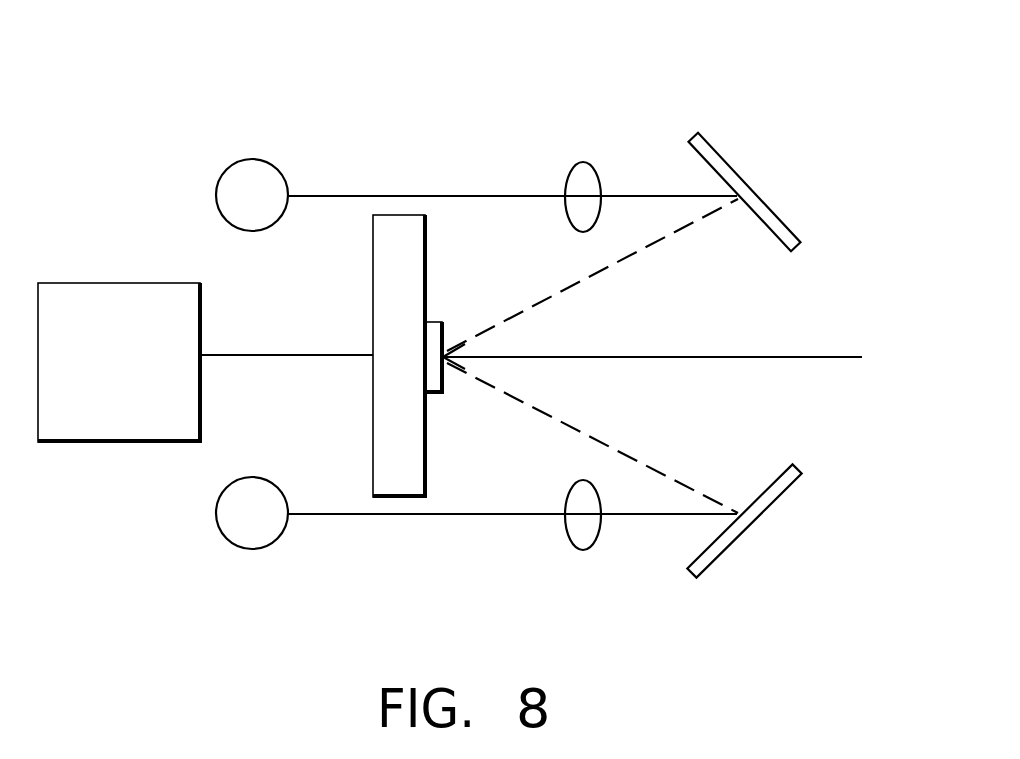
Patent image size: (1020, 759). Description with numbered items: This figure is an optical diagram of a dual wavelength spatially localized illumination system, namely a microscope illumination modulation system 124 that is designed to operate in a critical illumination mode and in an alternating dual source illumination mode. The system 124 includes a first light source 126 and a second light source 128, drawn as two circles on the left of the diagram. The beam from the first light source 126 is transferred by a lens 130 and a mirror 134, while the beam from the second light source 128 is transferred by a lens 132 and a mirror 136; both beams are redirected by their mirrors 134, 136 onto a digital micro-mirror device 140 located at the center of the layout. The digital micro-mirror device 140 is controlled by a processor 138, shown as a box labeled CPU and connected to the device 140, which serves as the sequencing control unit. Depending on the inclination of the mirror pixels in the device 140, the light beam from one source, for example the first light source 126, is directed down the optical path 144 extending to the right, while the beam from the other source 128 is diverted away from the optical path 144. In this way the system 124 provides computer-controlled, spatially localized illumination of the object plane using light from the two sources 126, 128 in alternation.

The microscope illumination modulation system 124 is at (520, 115).
The first light source 126 is at (243, 538).
The second light source 128 is at (249, 178).
The lens 130 is at (568, 535).
The lens 132 is at (582, 178).
The mirror 134 is at (727, 545).
The mirror 136 is at (773, 207).
The processor 138 is at (125, 428).
The digital micro-mirror device 140 is at (381, 434).
The optical path 144 is at (765, 360).